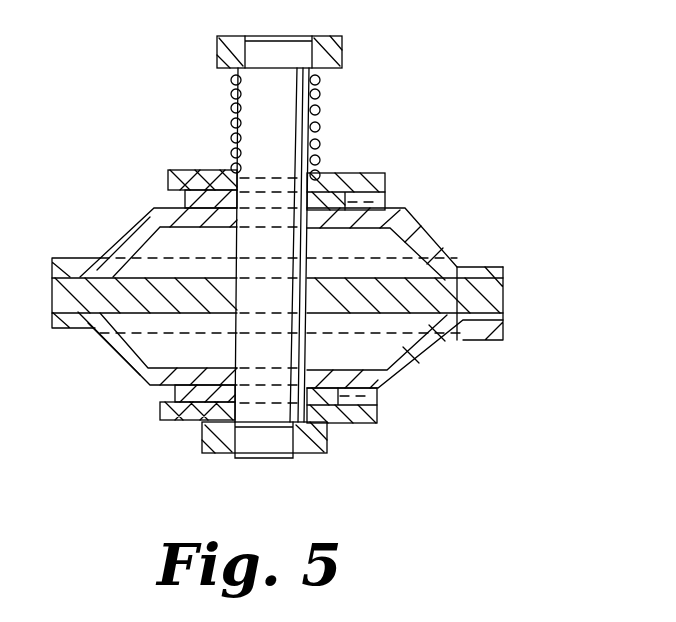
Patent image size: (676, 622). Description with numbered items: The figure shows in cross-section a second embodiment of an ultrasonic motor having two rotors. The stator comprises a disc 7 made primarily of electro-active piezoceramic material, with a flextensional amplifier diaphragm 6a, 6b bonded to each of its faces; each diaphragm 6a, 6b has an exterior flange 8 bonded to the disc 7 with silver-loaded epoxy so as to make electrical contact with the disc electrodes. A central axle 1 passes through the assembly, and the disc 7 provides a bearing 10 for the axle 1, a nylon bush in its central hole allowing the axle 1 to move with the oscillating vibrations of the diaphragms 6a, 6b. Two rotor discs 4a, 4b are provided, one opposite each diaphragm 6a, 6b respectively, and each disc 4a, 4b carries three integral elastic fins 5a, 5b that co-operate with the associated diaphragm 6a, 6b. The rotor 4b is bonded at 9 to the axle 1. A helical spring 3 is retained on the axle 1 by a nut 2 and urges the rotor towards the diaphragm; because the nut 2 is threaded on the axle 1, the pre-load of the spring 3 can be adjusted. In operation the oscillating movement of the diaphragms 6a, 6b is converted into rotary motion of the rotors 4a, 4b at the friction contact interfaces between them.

The axle 1 is at (303, 34).
The nut 2 is at (325, 60).
The helical spring 3 is at (318, 150).
The disc 4a is at (385, 188).
The disc 4b is at (378, 423).
The elastic fins 5a is at (183, 200).
The elastic fins 5b is at (175, 390).
The flextensional amplifier diaphragm 6a is at (420, 362).
The flextensional amplifier diaphragm 6b is at (430, 237).
The disc 7 is at (455, 305).
The exterior flange 8 is at (505, 320).
The bond 9 is at (203, 450).
The bearing 10 is at (240, 293).